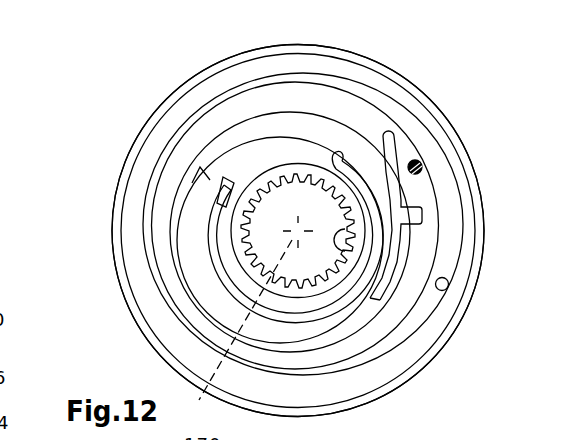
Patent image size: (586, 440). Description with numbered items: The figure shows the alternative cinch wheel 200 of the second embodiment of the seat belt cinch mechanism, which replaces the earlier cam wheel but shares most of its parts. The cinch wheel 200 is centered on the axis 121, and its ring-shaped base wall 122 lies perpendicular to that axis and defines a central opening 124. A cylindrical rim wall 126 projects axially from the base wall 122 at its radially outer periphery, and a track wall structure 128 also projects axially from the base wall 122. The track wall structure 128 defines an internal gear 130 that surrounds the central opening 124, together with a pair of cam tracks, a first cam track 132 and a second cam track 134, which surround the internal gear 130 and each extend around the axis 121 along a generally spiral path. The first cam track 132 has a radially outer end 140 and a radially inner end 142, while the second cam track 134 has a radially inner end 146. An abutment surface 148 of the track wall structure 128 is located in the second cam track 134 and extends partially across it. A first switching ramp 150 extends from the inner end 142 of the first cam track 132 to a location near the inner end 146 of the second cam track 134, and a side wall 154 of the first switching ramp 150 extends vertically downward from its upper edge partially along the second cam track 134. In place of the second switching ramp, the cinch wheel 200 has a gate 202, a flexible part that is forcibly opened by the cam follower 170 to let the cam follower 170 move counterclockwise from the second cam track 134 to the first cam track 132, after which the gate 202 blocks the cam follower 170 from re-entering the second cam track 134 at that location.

The axis 121 is at (232, 331).
The base wall 122 is at (136, 281).
The central opening 124 is at (328, 277).
The rim wall 126 is at (141, 317).
The track wall structure 128 is at (181, 334).
The internal gear 130 is at (410, 302).
The first cam track 132 is at (287, 73).
The second cam track 134 is at (313, 139).
The radially outer end 140 is at (449, 293).
The radially inner end 142 is at (207, 216).
The radially inner end 146 is at (378, 125).
The abutment surface 148 is at (190, 182).
The first switching ramp 150 is at (230, 180).
The side wall 154 is at (247, 177).
The cam follower 170 is at (422, 164).
The cinch wheel 200 is at (128, 110).
The gate 202 is at (395, 146).